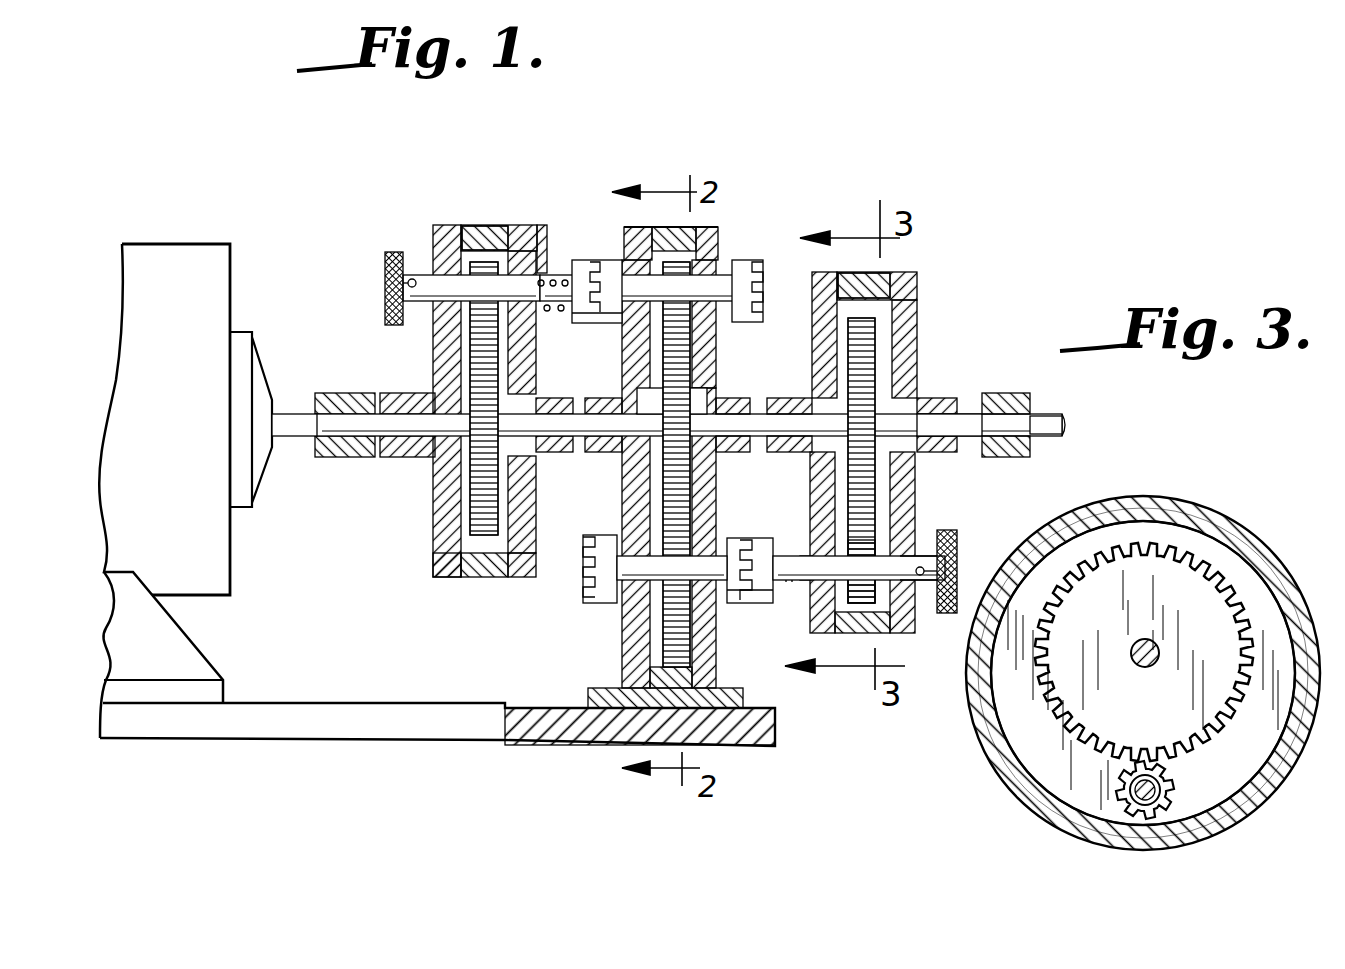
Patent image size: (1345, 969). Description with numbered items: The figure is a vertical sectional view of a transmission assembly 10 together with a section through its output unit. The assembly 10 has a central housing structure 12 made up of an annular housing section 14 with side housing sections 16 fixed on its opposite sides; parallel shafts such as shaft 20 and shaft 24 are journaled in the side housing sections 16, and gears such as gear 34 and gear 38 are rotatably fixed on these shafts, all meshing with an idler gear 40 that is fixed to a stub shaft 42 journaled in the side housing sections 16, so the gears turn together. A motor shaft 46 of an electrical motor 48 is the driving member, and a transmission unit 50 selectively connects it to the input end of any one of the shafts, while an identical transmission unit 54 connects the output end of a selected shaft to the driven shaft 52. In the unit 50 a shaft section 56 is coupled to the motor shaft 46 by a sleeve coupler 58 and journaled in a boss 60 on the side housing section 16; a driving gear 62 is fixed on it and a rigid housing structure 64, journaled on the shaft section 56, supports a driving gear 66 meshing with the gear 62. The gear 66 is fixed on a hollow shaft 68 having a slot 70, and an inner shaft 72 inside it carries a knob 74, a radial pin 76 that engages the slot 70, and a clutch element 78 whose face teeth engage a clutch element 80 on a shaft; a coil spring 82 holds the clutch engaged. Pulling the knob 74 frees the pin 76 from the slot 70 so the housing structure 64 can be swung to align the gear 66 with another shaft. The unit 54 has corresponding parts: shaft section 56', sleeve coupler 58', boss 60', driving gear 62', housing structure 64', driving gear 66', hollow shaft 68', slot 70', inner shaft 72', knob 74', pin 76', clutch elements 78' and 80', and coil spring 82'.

In FIG. 1, the transmission assembly 10 is at (501, 369).
In FIG. 1, the central housing structure 12 is at (883, 407).
In FIG. 1, the annular housing section 14 is at (705, 688).
In FIG. 1, the side housing sections 16 is at (648, 492).
In FIG. 1, the shaft 20 is at (738, 268).
In FIG. 1, the shaft 24 is at (612, 602).
In FIG. 1, the gear 34 is at (678, 262).
In FIG. 1, the gear 38 is at (690, 631).
In FIG. 1, the idler gear 40 is at (695, 356).
In FIG. 1, the stub shaft 42 is at (712, 396).
In FIG. 1, the motor shaft 46 is at (292, 440).
In FIG. 1, the electrical motor 48 is at (240, 258).
In FIG. 1, the transmission unit 50 is at (579, 384).
In FIG. 1, the driven shaft 52 is at (1050, 432).
In FIG. 1, the transmission unit 54 is at (918, 280).
In FIG. 3, the transmission unit 54 is at (1236, 508).
In FIG. 1, the shaft section 56 is at (690, 463).
In FIG. 1, the shaft section 56' is at (952, 403).
In FIG. 3, the shaft section 56' is at (1160, 681).
In FIG. 1, the sleeve coupler 58 is at (345, 403).
In FIG. 1, the sleeve coupler 58' is at (1013, 412).
In FIG. 1, the boss 60 is at (579, 404).
In FIG. 1, the boss 60' is at (765, 409).
In FIG. 1, the driving gear 62 is at (458, 401).
In FIG. 1, the driving gear 62' is at (916, 460).
In FIG. 3, the driving gear 62' is at (1165, 659).
In FIG. 1, the housing structure 64 is at (449, 220).
In FIG. 1, the housing structure 64' is at (913, 293).
In FIG. 3, the housing structure 64' is at (1143, 640).
In FIG. 1, the driving gear 66 is at (481, 364).
In FIG. 1, the driving gear 66' is at (916, 540).
In FIG. 3, the driving gear 66' is at (1143, 685).
In FIG. 1, the hollow shaft 68 is at (559, 238).
In FIG. 1, the hollow shaft 68' is at (790, 519).
In FIG. 3, the hollow shaft 68' is at (1088, 812).
In FIG. 1, the slot 70 is at (425, 285).
In FIG. 1, the slot 70' is at (955, 567).
In FIG. 1, the inner shaft 72 is at (639, 318).
In FIG. 1, the inner shaft 72' is at (859, 607).
In FIG. 3, the inner shaft 72' is at (1182, 785).
In FIG. 1, the knob 74 is at (361, 290).
In FIG. 1, the knob 74' is at (976, 569).
In FIG. 1, the pin 76 is at (394, 251).
In FIG. 1, the pin 76' is at (937, 609).
In FIG. 1, the clutch element 78 is at (597, 266).
In FIG. 1, the clutch element 78' is at (751, 534).
In FIG. 1, the clutch element 80 is at (592, 416).
In FIG. 1, the clutch element 80' is at (768, 430).
In FIG. 1, the coil spring 82 is at (563, 270).
In FIG. 1, the coil spring 82' is at (786, 544).